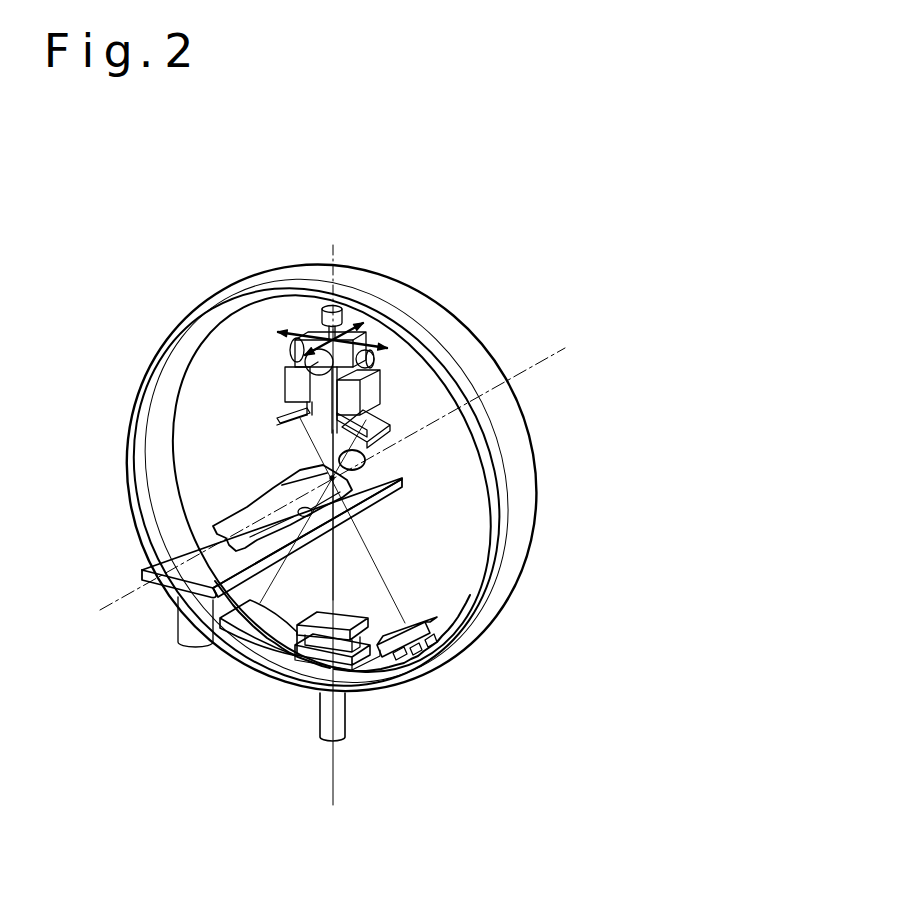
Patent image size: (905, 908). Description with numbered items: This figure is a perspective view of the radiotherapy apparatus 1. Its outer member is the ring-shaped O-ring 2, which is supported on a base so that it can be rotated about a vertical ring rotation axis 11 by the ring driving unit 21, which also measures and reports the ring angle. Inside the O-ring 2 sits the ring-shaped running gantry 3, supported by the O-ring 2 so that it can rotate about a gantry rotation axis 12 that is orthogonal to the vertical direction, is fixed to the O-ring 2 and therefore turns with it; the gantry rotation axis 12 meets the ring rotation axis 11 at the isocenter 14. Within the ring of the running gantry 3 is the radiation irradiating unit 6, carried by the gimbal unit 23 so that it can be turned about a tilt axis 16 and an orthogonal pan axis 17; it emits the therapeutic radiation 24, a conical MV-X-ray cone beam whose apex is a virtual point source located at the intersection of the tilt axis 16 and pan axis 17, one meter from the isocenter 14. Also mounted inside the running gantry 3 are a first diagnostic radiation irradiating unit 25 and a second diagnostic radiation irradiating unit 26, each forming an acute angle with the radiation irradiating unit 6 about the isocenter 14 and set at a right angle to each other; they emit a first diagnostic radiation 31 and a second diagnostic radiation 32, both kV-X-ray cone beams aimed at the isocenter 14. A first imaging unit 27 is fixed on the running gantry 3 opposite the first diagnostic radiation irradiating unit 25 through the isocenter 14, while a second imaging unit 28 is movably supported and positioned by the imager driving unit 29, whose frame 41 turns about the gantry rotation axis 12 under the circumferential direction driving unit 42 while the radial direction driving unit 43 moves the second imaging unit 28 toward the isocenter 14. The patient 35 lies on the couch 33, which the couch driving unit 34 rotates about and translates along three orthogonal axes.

The radiotherapy apparatus 1 is at (104, 296).
The O-ring 2 is at (525, 422).
The running gantry 3 is at (484, 489).
The radiation irradiating unit 6 is at (320, 335).
The ring rotation axis 11 is at (336, 763).
The gantry rotation axis 12 is at (108, 600).
The isocenter 14 is at (338, 484).
The tilt axis 16 is at (370, 344).
The pan axis 17 is at (345, 340).
The ring driving unit 21 is at (320, 723).
The gimbal unit 23 is at (378, 361).
The therapeutic radiation 24 is at (334, 572).
The first diagnostic radiation irradiating unit 25 is at (292, 438).
The second diagnostic radiation irradiating unit 26 is at (366, 461).
The first imaging unit 27 is at (443, 625).
The second imaging unit 28 is at (327, 617).
The imager driving unit 29 is at (382, 672).
The first diagnostic radiation 31 is at (281, 484).
The second diagnostic radiation 32 is at (376, 556).
The couch 33 is at (147, 569).
The couch driving unit 34 is at (180, 628).
The patient 35 is at (252, 508).
The frame 41 is at (268, 669).
The circumferential direction driving unit 42 is at (272, 622).
The radial direction driving unit 43 is at (322, 640).